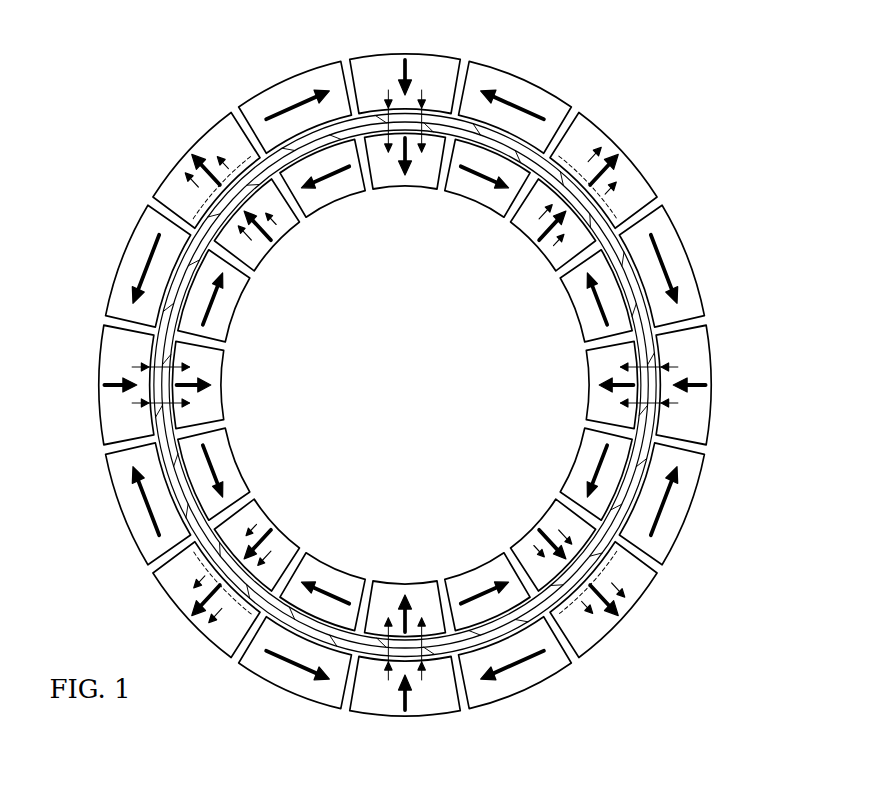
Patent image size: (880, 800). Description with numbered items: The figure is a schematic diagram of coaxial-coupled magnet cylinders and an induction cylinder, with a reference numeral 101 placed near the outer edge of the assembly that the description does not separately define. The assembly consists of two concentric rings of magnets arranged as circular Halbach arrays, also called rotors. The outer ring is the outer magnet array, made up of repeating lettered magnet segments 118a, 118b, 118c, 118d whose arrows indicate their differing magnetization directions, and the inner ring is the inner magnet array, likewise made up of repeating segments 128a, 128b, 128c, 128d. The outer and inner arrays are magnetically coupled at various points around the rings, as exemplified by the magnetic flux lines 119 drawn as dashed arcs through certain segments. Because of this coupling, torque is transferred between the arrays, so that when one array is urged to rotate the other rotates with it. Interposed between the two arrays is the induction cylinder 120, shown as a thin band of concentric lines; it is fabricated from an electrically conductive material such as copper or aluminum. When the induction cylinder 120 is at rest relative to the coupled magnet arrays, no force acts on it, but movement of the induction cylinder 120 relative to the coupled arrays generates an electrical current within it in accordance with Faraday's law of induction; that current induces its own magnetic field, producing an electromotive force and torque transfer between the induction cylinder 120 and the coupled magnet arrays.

The magnet assembly 101 is at (545, 680).
The outer magnet array 118a is at (515, 90).
The outer magnet array 118b is at (215, 140).
The outer magnet array 118c is at (310, 88).
The outer magnet array 118d is at (385, 65).
The magnetic flux lines 119 is at (430, 100).
The induction cylinder 120 is at (283, 157).
The inner magnet array 128a is at (478, 195).
The inner magnet array 128b is at (282, 235).
The inner magnet array 128c is at (335, 195).
The inner magnet array 128d is at (395, 180).